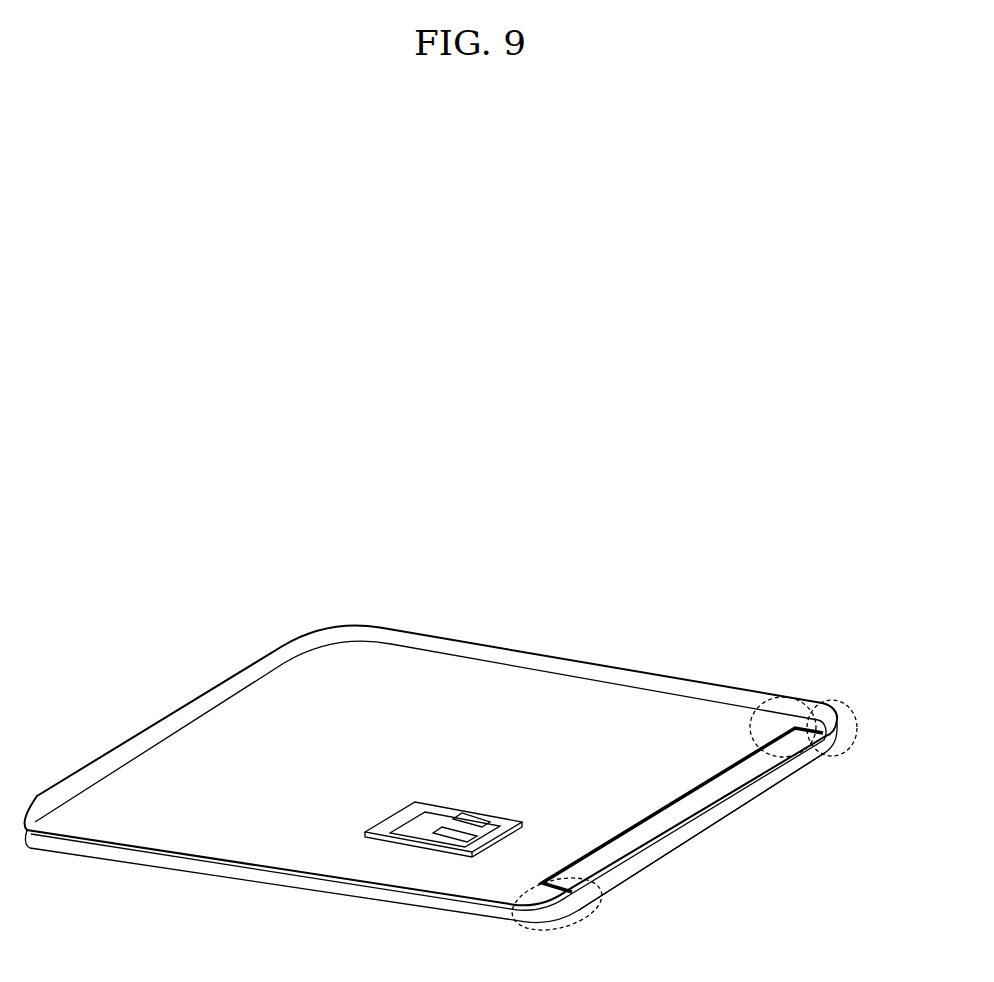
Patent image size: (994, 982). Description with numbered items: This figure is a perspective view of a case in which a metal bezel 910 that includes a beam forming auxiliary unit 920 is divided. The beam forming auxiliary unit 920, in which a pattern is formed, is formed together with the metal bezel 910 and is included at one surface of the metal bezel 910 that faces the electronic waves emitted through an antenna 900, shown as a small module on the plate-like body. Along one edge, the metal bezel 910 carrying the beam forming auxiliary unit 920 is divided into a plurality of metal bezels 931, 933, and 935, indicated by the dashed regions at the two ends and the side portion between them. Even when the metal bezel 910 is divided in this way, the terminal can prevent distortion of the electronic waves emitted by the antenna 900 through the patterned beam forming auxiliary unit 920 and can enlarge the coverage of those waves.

The antenna 900 is at (413, 843).
The metal bezel 910 is at (600, 664).
The beam forming auxiliary unit 920 is at (788, 698).
The metal bezel 931 is at (580, 908).
The metal bezel 933 is at (718, 820).
The metal bezel 935 is at (852, 740).